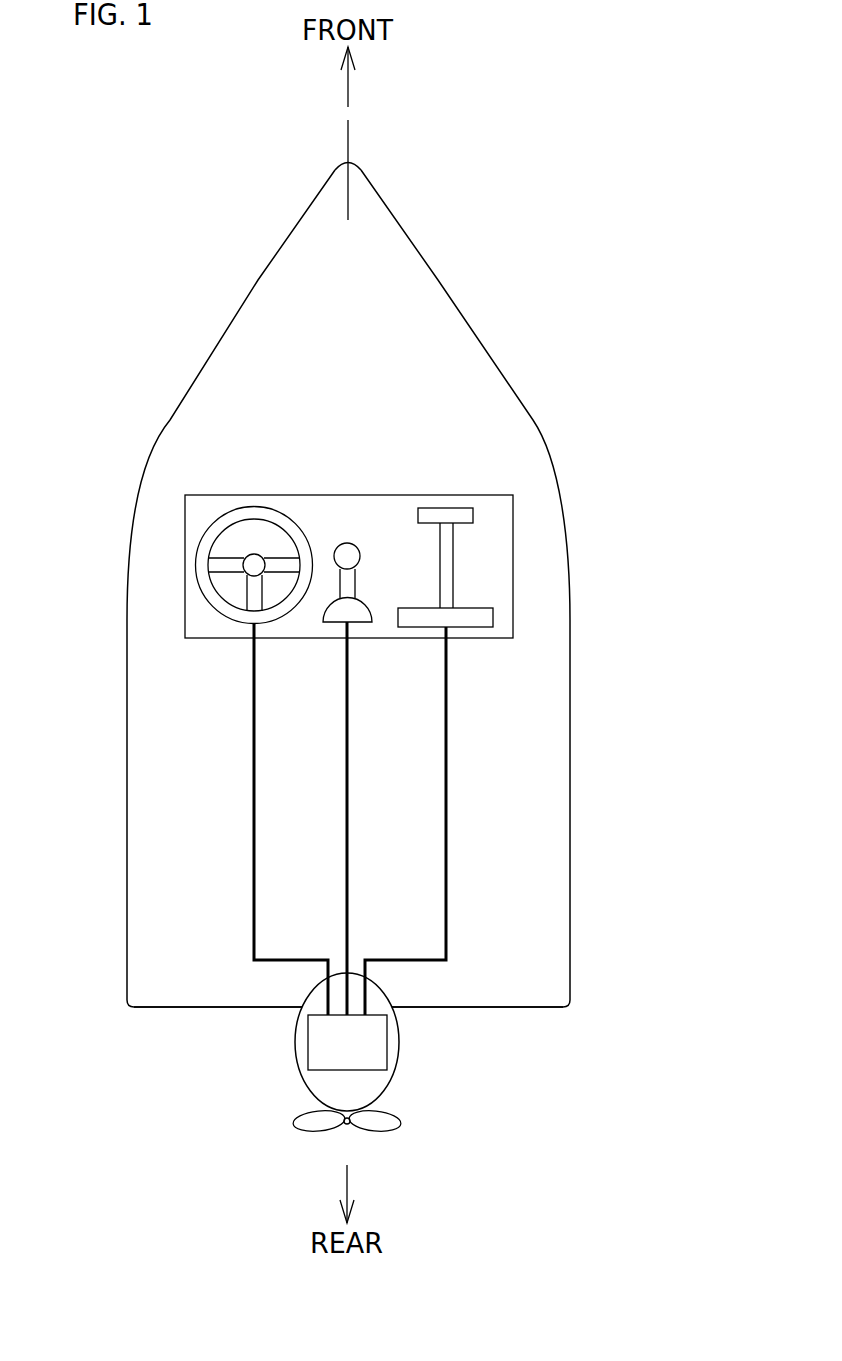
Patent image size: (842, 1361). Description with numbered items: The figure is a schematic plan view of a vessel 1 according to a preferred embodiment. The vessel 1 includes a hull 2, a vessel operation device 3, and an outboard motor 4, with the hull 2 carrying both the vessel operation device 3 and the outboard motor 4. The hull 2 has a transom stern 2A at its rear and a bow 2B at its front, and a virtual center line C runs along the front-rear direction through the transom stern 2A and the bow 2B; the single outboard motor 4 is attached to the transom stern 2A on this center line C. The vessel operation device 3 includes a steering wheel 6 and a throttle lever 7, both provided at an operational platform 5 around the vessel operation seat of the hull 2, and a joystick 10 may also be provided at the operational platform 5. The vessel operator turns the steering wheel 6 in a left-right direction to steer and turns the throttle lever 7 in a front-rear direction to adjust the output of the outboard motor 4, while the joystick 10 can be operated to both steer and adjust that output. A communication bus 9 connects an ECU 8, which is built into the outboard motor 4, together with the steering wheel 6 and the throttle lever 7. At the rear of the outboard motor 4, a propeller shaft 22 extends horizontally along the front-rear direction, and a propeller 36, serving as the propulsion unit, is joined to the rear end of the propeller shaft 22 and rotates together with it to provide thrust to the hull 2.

The vessel 1 is at (523, 303).
The hull 2 is at (162, 436).
The transom stern 2A is at (215, 1008).
The bow 2B is at (333, 163).
The vessel operation device 3 is at (523, 558).
The outboard motor 4 is at (297, 1070).
The operational platform 5 is at (383, 507).
The steering wheel 6 is at (255, 512).
The throttle lever 7 is at (457, 515).
The ECU 8 is at (377, 1058).
The communication bus 9 is at (252, 825).
The joystick 10 is at (346, 545).
The propeller shaft 22 is at (345, 1123).
The propeller 36 is at (312, 1123).
The center line C is at (350, 133).